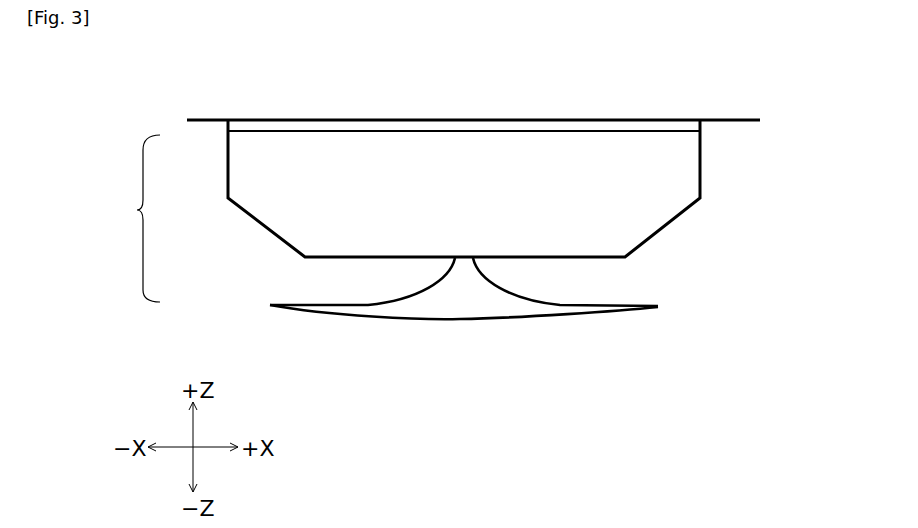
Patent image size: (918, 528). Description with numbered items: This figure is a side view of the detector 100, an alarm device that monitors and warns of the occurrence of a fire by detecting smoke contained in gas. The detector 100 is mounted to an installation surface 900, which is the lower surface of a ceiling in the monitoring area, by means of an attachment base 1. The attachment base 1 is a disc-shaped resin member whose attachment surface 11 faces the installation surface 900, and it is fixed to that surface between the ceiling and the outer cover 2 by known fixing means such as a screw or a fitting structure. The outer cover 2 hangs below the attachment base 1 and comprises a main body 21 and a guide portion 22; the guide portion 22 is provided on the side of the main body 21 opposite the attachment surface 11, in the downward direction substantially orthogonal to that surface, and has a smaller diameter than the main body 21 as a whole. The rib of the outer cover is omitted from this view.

The attachment base 1 is at (672, 123).
The attachment surface 11 is at (465, 120).
The installation surface 900 is at (733, 123).
The outer cover 2 is at (136, 218).
The main body 21 is at (663, 187).
The guide portion 22 is at (523, 308).
The detector 100 is at (372, 395).